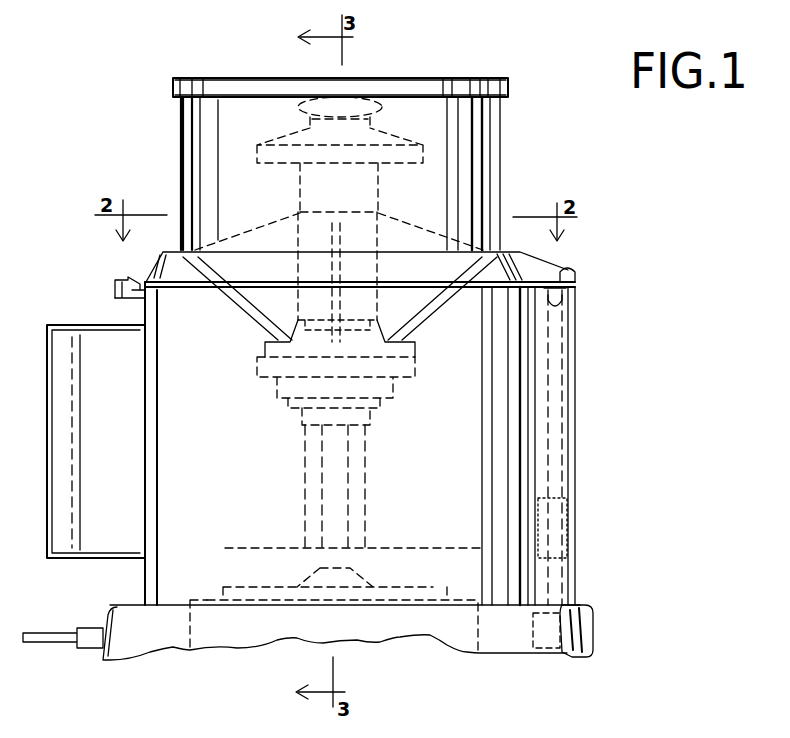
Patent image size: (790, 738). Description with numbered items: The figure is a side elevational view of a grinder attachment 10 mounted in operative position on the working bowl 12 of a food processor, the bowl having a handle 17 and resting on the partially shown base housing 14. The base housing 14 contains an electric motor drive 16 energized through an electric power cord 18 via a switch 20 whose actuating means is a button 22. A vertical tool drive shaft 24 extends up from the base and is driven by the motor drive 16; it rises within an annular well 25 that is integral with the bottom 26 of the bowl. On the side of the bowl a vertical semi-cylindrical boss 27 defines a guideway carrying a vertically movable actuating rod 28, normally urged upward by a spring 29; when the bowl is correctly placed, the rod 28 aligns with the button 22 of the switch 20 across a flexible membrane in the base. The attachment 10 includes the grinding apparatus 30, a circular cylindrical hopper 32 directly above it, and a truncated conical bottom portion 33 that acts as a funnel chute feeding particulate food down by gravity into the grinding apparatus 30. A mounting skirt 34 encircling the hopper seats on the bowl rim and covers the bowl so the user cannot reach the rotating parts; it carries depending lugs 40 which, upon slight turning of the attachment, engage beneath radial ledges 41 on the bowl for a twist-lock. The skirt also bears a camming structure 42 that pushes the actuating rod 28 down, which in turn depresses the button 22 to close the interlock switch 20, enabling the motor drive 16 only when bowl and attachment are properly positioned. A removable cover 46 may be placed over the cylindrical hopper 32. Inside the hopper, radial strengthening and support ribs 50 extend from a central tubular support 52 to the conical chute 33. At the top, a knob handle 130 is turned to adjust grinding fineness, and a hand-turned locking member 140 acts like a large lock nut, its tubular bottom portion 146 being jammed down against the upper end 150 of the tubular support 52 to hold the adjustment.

The grinder attachment 10 is at (552, 158).
The working bowl 12 is at (138, 312).
The base housing 14 is at (595, 632).
The electric motor drive 16 is at (488, 640).
The handle 17 is at (48, 425).
The electric power cord 18 is at (50, 633).
The switch 20 is at (562, 660).
The button 22 is at (582, 605).
The tool drive shaft 24 is at (348, 520).
The annular well 25 is at (367, 460).
The bottom 26 is at (250, 548).
The semi-cylindrical boss 27 is at (572, 405).
The actuating rod 28 is at (563, 414).
The spring 29 is at (565, 513).
The grinding apparatus 30 is at (247, 361).
The cylindrical hopper 32 is at (503, 145).
The truncated conical bottom portion 33 is at (433, 327).
The mounting skirt 34 is at (528, 250).
The depending lugs 40 is at (115, 293).
The radial ledges 41 is at (128, 277).
The camming structure 42 is at (572, 270).
The removable cover 46 is at (412, 80).
The radial strengthening and support ribs 50 is at (276, 228).
The central tubular support 52 is at (373, 247).
The knob handle 130 is at (348, 95).
The locking member 140 is at (265, 143).
The tubular bottom portion 146 is at (298, 180).
The upper end 150 is at (380, 200).